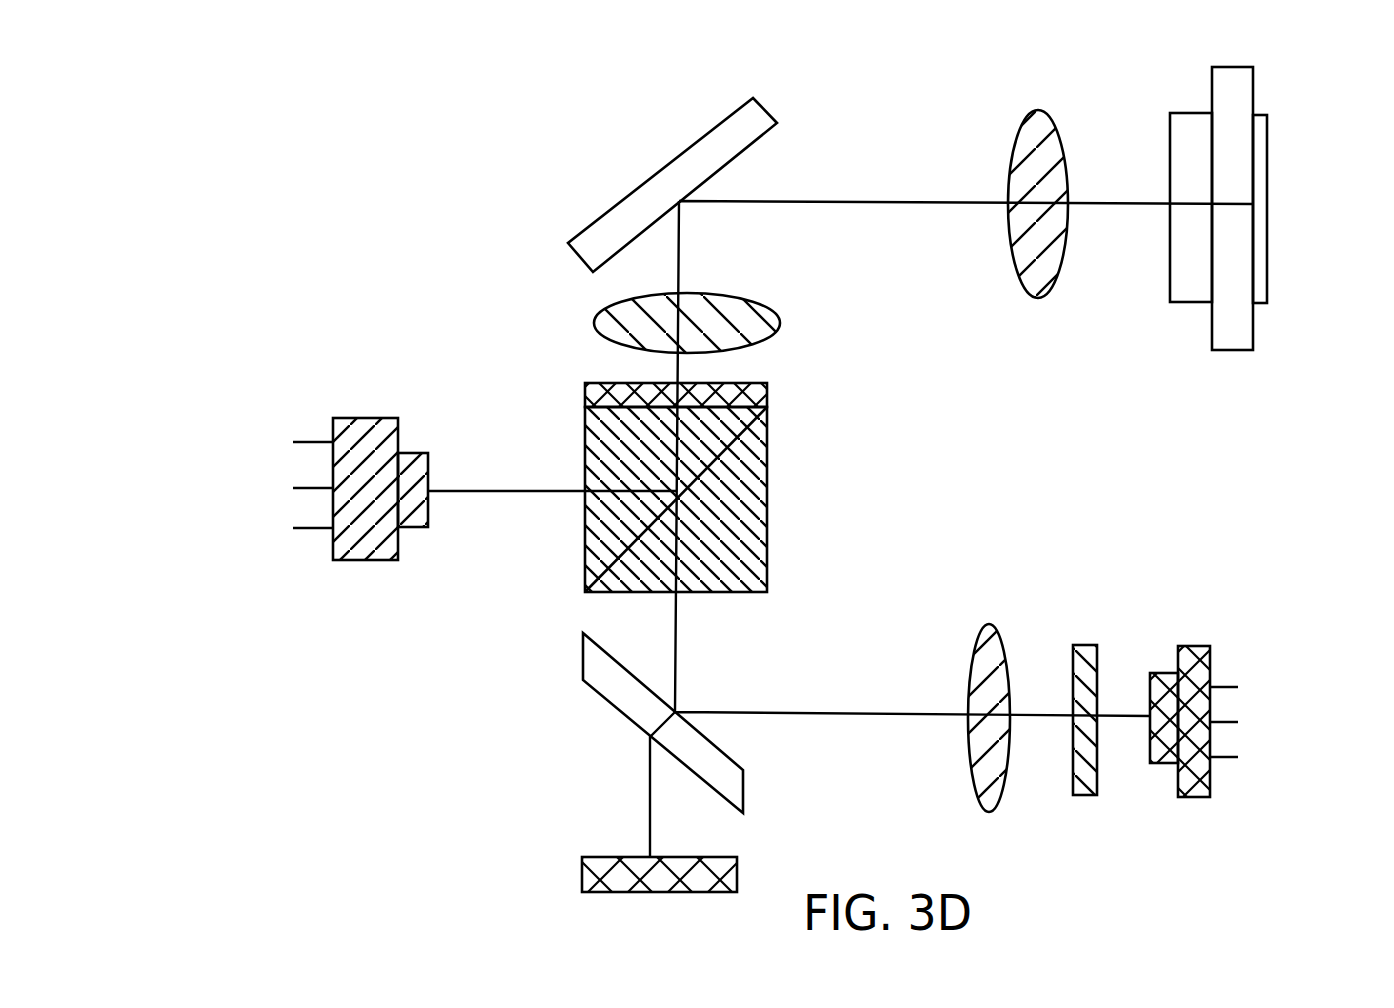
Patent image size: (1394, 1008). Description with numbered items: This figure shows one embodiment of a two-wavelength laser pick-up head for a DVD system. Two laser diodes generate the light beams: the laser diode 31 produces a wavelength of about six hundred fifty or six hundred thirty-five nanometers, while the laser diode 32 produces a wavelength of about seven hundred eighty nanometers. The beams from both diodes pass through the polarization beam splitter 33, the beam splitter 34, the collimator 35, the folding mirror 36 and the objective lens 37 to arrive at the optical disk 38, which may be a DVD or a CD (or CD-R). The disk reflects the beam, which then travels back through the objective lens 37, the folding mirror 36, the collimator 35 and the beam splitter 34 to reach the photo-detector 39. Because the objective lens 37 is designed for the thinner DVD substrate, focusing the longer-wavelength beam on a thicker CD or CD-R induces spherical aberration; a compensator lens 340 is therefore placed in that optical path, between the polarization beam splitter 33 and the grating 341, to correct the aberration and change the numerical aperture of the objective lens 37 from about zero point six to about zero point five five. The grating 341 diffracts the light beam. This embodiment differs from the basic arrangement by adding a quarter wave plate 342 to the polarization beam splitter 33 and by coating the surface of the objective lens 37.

The laser diode 31 is at (338, 583).
The laser diode 32 is at (1212, 627).
The polarization beam splitter 33 is at (560, 552).
The beam splitter 34 is at (568, 697).
The collimator 35 is at (587, 327).
The folding mirror 36 is at (665, 147).
The objective lens 37 is at (1017, 130).
The optical disk 38 is at (1268, 63).
The photo-detector 39 is at (603, 845).
The compensator lens 340 is at (1007, 625).
The grating 341 is at (1100, 630).
The quarter wave plate 342 is at (570, 393).